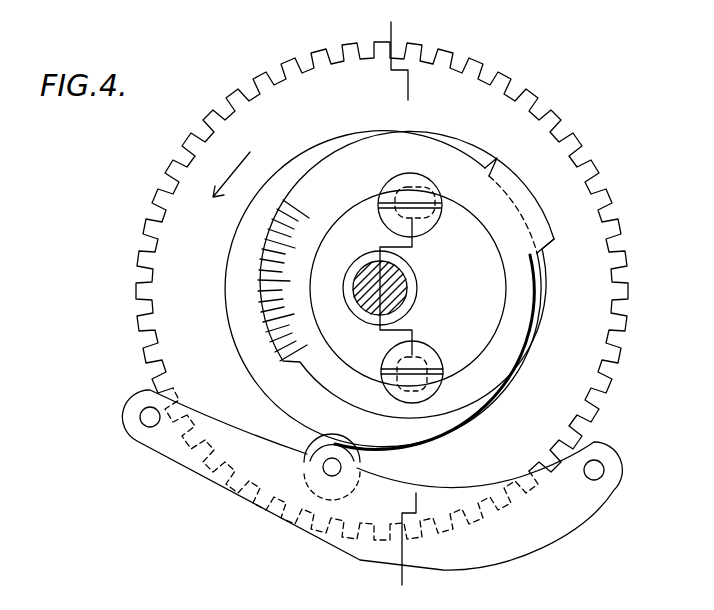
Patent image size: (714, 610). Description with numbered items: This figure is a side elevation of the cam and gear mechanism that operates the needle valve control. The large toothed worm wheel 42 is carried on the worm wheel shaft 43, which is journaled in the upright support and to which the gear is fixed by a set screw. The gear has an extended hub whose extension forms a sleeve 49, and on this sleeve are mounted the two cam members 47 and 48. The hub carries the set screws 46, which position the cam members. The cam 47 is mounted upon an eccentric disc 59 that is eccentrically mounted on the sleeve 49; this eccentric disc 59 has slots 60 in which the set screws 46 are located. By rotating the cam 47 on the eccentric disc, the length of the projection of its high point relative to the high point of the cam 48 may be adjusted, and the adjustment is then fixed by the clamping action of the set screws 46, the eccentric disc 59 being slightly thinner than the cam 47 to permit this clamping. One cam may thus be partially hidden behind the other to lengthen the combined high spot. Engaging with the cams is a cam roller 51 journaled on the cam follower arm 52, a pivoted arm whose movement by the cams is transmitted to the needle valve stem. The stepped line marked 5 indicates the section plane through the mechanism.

The worm wheel 42 is at (567, 134).
The worm wheel shaft 43 is at (395, 280).
The set screws 46 is at (422, 180).
The cam member 47 is at (401, 110).
The cam member 48 is at (333, 128).
The sleeve 49 is at (408, 308).
The cam roller 51 is at (360, 462).
The cam follower arm 52 is at (255, 478).
The eccentric disc 59 is at (487, 278).
The slots 60 is at (424, 381).
The section line 5- 5 is at (398, 305).